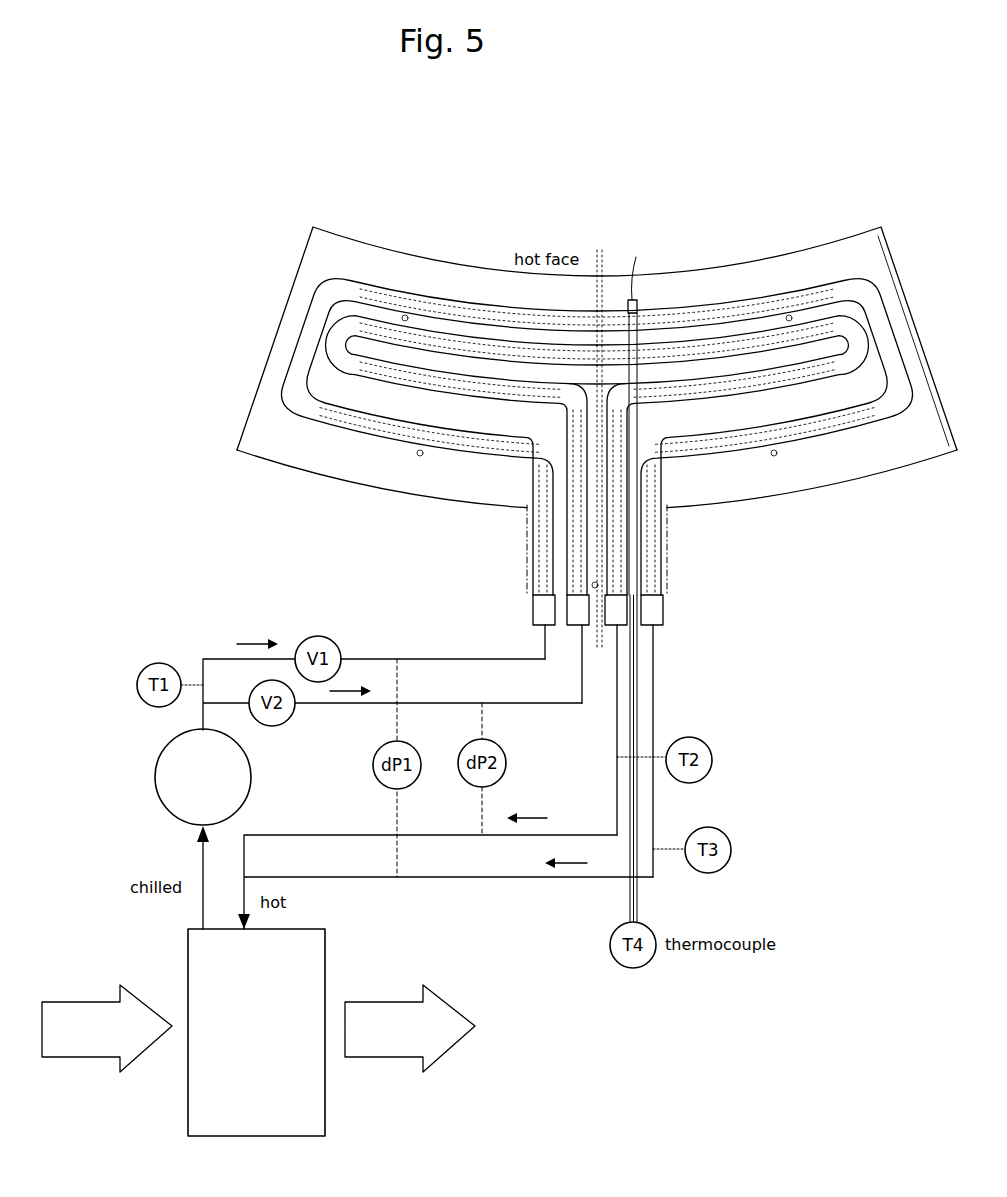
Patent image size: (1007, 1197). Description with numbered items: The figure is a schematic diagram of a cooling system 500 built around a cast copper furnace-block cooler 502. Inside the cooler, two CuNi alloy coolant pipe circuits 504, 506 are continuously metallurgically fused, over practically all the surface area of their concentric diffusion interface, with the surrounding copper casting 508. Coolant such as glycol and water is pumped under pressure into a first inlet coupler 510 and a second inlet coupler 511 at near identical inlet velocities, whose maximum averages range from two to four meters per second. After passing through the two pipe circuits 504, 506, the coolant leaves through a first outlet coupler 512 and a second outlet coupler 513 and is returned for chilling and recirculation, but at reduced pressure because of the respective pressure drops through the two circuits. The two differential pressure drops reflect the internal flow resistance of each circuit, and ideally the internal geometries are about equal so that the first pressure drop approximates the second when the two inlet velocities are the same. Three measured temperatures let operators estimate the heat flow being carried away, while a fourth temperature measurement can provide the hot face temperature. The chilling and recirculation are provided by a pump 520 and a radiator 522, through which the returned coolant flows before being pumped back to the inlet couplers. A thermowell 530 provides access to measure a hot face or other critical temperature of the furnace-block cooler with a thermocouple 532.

The cooling system 500 is at (328, 158).
The furnace-block cooler 502 is at (293, 282).
The CuNi alloy coolant pipe circuit 504 is at (352, 430).
The CuNi alloy coolant pipe circuit 506 is at (433, 388).
The copper casting 508 is at (722, 486).
The first inlet coupler 510 is at (531, 611).
The second inlet coupler 511 is at (568, 627).
The first outlet coupler 512 is at (621, 627).
The second outlet coupler 513 is at (665, 611).
The pump 520 is at (187, 761).
The radiator 522 is at (268, 989).
The thermowell 530 is at (636, 417).
The thermocouple 532 is at (641, 717).